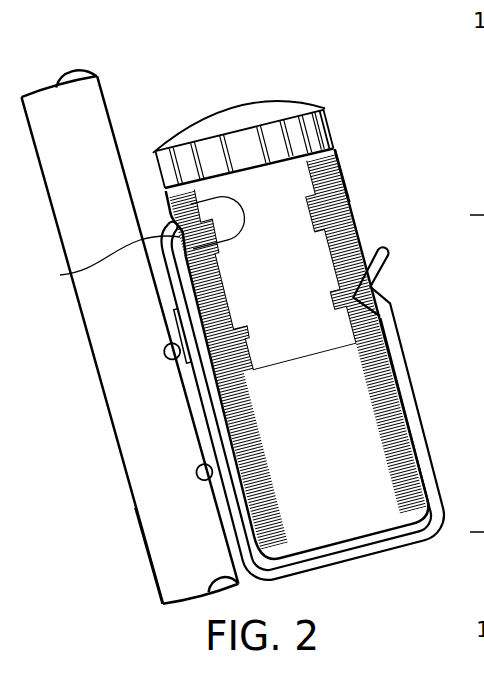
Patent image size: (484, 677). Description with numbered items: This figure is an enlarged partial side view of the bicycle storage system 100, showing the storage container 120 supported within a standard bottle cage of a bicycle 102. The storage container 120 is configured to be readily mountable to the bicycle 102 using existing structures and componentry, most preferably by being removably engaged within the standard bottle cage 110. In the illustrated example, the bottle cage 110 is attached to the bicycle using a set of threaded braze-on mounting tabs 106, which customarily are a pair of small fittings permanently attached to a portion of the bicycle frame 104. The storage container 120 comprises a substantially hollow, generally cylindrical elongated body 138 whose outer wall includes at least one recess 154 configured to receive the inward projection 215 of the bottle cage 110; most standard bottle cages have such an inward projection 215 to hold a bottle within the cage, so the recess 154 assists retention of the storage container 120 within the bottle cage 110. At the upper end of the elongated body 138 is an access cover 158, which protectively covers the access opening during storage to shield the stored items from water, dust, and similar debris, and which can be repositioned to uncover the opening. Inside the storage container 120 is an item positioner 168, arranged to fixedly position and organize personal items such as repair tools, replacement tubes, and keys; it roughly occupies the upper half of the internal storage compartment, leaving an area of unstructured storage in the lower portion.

The bicycle storage system 100 is at (235, 94).
The bicycle 102 is at (114, 92).
The bicycle frame 104 is at (134, 509).
The mounting tabs 106 is at (164, 350).
The bottle cage 110 is at (392, 262).
The storage container 120 is at (387, 82).
The elongated body 138 is at (338, 152).
The recess 154 is at (232, 243).
The access cover 158 is at (285, 103).
The item positioner 168 is at (272, 365).
The inward projection 215 is at (101, 262).